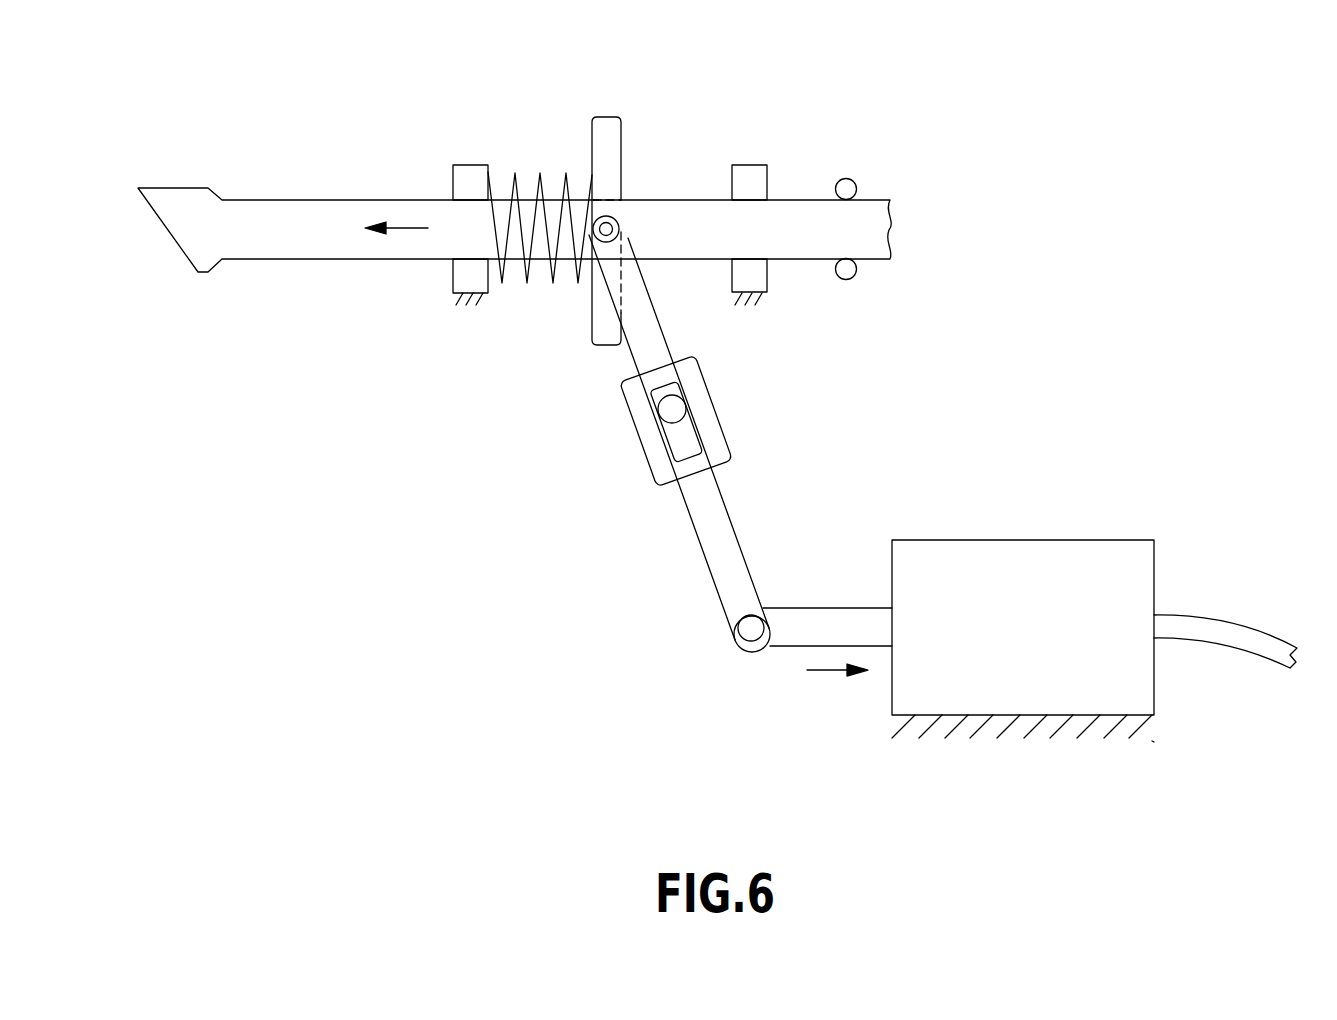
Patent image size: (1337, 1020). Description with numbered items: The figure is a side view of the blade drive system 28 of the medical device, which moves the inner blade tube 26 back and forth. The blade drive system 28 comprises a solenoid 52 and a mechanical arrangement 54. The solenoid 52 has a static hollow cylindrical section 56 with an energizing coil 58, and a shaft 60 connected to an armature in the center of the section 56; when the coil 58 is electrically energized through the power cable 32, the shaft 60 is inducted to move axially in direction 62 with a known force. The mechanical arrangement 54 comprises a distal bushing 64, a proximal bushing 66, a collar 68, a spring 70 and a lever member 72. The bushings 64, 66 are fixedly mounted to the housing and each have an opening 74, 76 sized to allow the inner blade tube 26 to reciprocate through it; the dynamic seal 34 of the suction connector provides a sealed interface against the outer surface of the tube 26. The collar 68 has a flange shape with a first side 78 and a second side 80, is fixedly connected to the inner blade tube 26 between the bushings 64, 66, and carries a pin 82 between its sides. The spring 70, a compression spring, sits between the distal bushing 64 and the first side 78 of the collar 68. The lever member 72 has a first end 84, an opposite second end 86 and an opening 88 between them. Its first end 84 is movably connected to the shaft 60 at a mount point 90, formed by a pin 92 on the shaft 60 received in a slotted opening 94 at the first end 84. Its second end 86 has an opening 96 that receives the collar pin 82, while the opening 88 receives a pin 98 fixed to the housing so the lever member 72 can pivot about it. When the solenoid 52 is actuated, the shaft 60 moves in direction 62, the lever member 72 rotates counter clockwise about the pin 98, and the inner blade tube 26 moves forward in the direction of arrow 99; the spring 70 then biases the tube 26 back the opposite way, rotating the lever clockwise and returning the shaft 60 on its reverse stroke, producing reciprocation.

The inner blade tube 26 is at (334, 223).
The blade drive system 28 is at (1113, 238).
The power cable 32 is at (1237, 623).
The dynamic seal 34 is at (852, 180).
The solenoid 52 is at (962, 702).
The mechanical arrangement 54 is at (357, 535).
The static hollow cylindrical section 56 is at (1024, 540).
The energizing coil 58 is at (1118, 702).
The shaft 60 is at (850, 608).
The direction 62 is at (820, 672).
The distal bushing 64 is at (470, 165).
The proximal bushing 66 is at (747, 163).
The collar 68 is at (596, 117).
The spring 70 is at (552, 270).
The lever member 72 is at (718, 547).
The opening 74 is at (470, 202).
The opening 76 is at (770, 199).
The first side 78 is at (590, 148).
The second side 80 is at (622, 143).
The pin 82 is at (606, 229).
The first end 84 is at (740, 645).
The second end 86 is at (627, 244).
The opening 88 is at (660, 432).
The mount point 90 is at (766, 672).
The pin 92 is at (750, 653).
The opening 94 is at (765, 630).
The opening 96 is at (620, 231).
The pin 98 is at (672, 410).
The arrow 99 is at (410, 231).